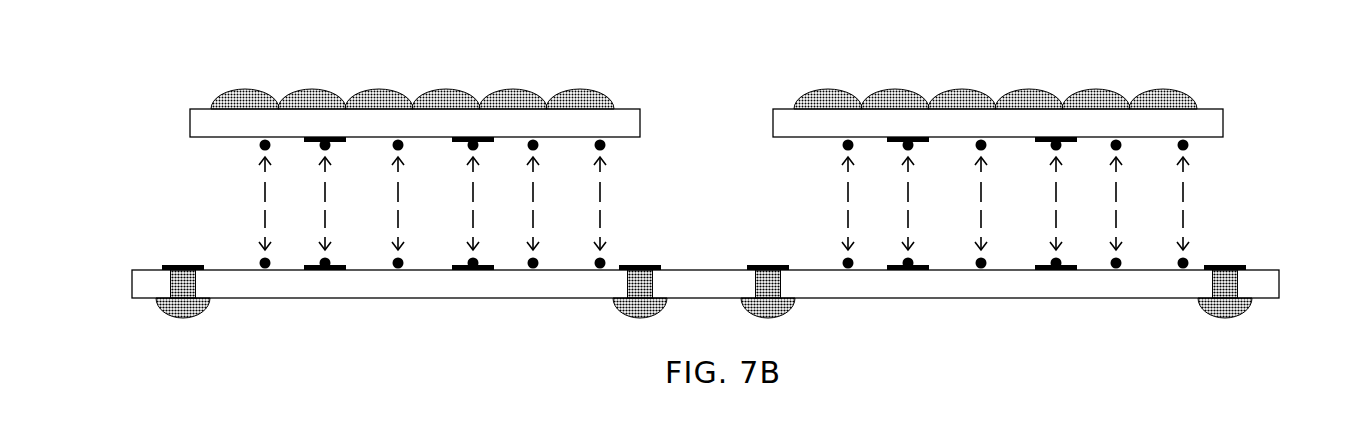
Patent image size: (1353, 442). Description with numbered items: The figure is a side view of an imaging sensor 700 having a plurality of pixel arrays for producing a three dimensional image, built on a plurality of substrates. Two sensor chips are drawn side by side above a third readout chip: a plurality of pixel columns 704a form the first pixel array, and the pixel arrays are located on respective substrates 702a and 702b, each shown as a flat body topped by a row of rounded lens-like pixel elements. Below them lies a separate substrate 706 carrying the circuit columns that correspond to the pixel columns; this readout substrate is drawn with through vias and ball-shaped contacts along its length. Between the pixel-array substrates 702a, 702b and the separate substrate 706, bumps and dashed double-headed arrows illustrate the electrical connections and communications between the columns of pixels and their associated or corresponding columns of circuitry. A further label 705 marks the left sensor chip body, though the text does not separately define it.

The imaging sensor 700 is at (1210, 220).
The substrate 702a is at (790, 130).
The substrate 702b is at (300, 92).
The pixel columns 704a is at (1190, 97).
The sensor chip substrate (Chip1) 705 is at (207, 133).
The separate substrate 706 is at (295, 284).